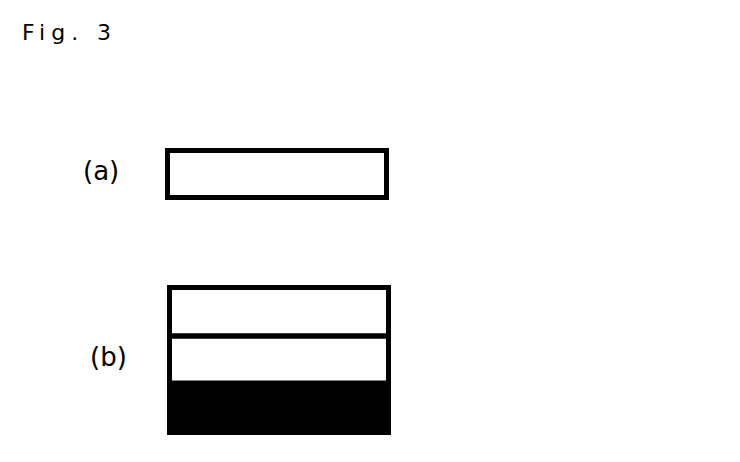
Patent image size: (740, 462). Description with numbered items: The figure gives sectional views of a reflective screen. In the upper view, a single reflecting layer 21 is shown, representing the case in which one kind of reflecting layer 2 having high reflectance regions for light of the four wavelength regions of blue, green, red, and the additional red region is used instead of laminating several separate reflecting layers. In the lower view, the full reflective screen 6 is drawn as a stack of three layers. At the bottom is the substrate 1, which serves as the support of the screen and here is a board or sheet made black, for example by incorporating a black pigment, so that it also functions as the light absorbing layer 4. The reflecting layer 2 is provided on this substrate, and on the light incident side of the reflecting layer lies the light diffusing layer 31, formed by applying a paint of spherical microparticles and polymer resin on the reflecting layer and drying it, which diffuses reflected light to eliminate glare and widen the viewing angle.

The first reflecting layer 21 is at (331, 173).
The light diffusing layer 31 is at (332, 309).
The reflecting layer 2 is at (327, 363).
The substrate 1 is at (391, 412).
The light absorbing layer 4 is at (336, 409).
The reflective screen 6 is at (600, 288).